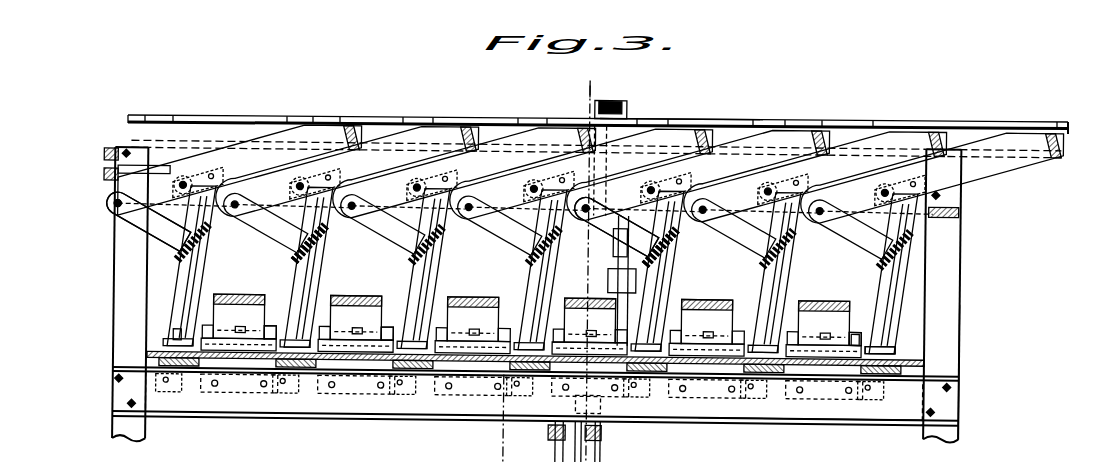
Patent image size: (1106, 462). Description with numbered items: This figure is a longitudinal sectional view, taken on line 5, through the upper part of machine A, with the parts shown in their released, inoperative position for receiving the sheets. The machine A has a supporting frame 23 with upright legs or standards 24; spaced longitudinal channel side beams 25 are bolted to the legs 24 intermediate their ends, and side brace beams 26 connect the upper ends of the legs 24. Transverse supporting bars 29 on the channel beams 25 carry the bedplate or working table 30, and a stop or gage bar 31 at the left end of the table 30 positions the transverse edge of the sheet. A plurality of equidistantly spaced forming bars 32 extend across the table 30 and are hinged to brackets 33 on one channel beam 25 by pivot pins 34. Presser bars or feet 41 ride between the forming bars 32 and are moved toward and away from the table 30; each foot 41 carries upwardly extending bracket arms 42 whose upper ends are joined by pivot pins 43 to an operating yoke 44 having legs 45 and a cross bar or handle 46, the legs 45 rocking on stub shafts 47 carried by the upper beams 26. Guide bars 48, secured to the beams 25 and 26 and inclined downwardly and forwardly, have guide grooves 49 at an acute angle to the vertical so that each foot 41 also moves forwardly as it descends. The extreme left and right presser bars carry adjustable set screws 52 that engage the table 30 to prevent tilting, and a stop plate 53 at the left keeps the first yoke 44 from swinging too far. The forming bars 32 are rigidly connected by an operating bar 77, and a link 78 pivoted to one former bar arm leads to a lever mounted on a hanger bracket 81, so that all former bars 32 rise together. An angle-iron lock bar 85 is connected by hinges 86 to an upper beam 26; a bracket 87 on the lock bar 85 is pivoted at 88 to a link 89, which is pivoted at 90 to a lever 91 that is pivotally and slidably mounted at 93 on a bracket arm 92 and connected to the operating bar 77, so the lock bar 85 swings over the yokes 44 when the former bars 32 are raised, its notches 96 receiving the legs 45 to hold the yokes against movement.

The section line 5 is at (563, 90).
The supporting frame 23 is at (858, 410).
The upright supporting legs or standards 24 is at (116, 436).
The side beams 25 is at (738, 412).
The side brace beams 26 is at (136, 155).
The supporting bars 29 is at (192, 376).
The bedplate or working table 30 is at (365, 362).
The stop or gage bar 31 is at (172, 342).
The forming bars 32 is at (250, 298).
The brackets 33 is at (272, 331).
The pivot pins 34 is at (856, 332).
The presser bars or feet 41 is at (210, 236).
The bracket arms 42 is at (143, 229).
The pivot pins 43 is at (112, 210).
The operating yoke 44 is at (325, 135).
The legs 45 is at (263, 153).
The cross bar or handle 46 is at (358, 130).
The stub shafts 47 is at (186, 185).
The guide bars 48 is at (181, 296).
The guide grooves 49 is at (205, 278).
The adjustable set screws 52 is at (172, 260).
The stop plate 53 is at (147, 165).
The operating bar 77 is at (393, 338).
The link 78 is at (572, 392).
The hanger bracket 81 is at (560, 452).
The lock bar 85 is at (713, 117).
The hinges 86 is at (150, 168).
The bracket 87 is at (612, 102).
The pivot 88 is at (625, 112).
The link 89 is at (605, 258).
The pivot 90 is at (607, 280).
The lever 91 is at (620, 240).
The bracket arm 92 is at (615, 312).
The pivotal and sliding mounting 93 is at (680, 318).
The notches 96 is at (420, 122).
The machine A is at (960, 352).